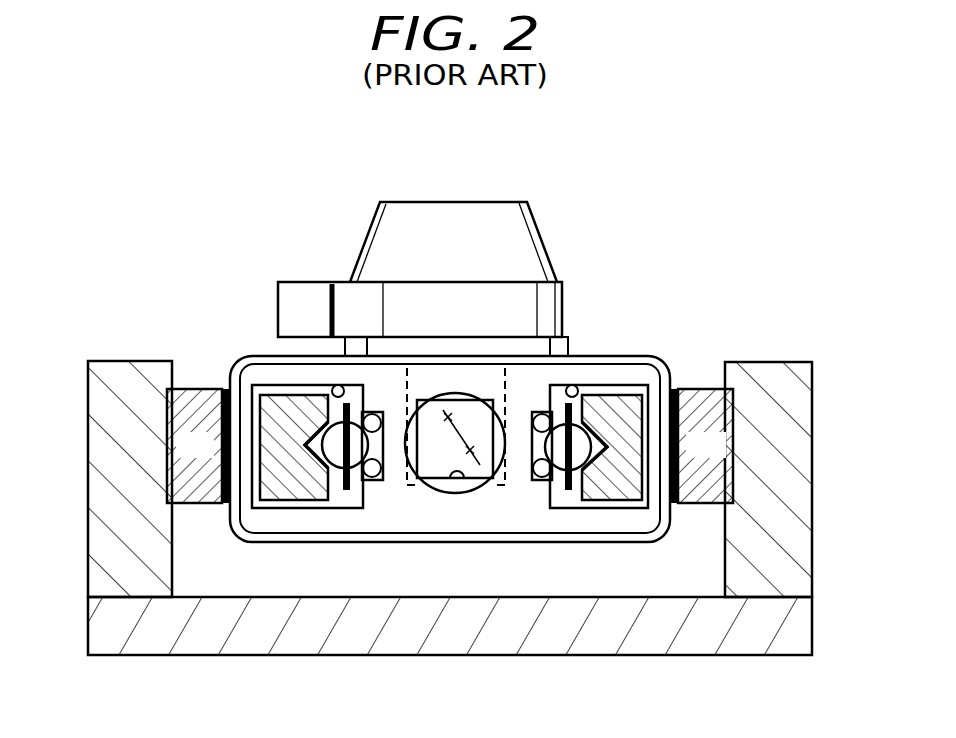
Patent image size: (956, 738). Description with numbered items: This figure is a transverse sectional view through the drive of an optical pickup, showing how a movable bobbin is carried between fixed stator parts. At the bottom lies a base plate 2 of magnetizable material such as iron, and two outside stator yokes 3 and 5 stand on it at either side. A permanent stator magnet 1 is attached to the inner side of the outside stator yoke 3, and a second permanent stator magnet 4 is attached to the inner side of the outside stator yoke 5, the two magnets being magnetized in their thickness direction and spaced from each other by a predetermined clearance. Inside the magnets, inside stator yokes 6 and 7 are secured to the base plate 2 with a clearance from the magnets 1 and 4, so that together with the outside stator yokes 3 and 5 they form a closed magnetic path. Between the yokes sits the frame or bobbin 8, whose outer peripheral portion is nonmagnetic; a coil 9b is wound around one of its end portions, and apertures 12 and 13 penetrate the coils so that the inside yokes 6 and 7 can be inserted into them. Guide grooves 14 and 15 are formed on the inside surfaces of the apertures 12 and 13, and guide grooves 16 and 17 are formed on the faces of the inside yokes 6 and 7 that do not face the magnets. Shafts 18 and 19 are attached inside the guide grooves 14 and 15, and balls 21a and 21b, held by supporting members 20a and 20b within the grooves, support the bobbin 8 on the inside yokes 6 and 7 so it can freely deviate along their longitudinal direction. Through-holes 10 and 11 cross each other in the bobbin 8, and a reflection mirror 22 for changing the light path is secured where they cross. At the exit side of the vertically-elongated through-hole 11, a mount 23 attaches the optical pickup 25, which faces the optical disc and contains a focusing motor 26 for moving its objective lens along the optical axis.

The permanent stator magnet 1 is at (188, 386).
The base plate 2 is at (148, 642).
The outside stator yoke 3 is at (95, 467).
The permanent stator magnet 4 is at (700, 403).
The outside stator yoke 5 is at (795, 467).
The inside stator yoke 6 is at (283, 405).
The inside stator yoke 7 is at (615, 412).
The bobbin 8 is at (387, 382).
The coil 9b is at (190, 405).
The through-hole 10 is at (457, 486).
The through-hole 11 is at (495, 383).
The aperture 12 is at (337, 388).
The aperture 13 is at (578, 390).
The guide groove 14 is at (385, 462).
The guide groove 15 is at (530, 440).
The guide groove 16 is at (333, 452).
The guide groove 17 is at (602, 447).
The shaft 18 is at (373, 477).
The shaft 19 is at (542, 477).
The supporting member 20a is at (345, 490).
The supporting member 20b is at (568, 490).
The ball 21a is at (308, 478).
The ball 21b is at (590, 478).
The reflection mirror 22 is at (468, 420).
The mount 23 is at (570, 348).
The optical pickup 25 is at (547, 250).
The focusing motor 26 is at (298, 281).